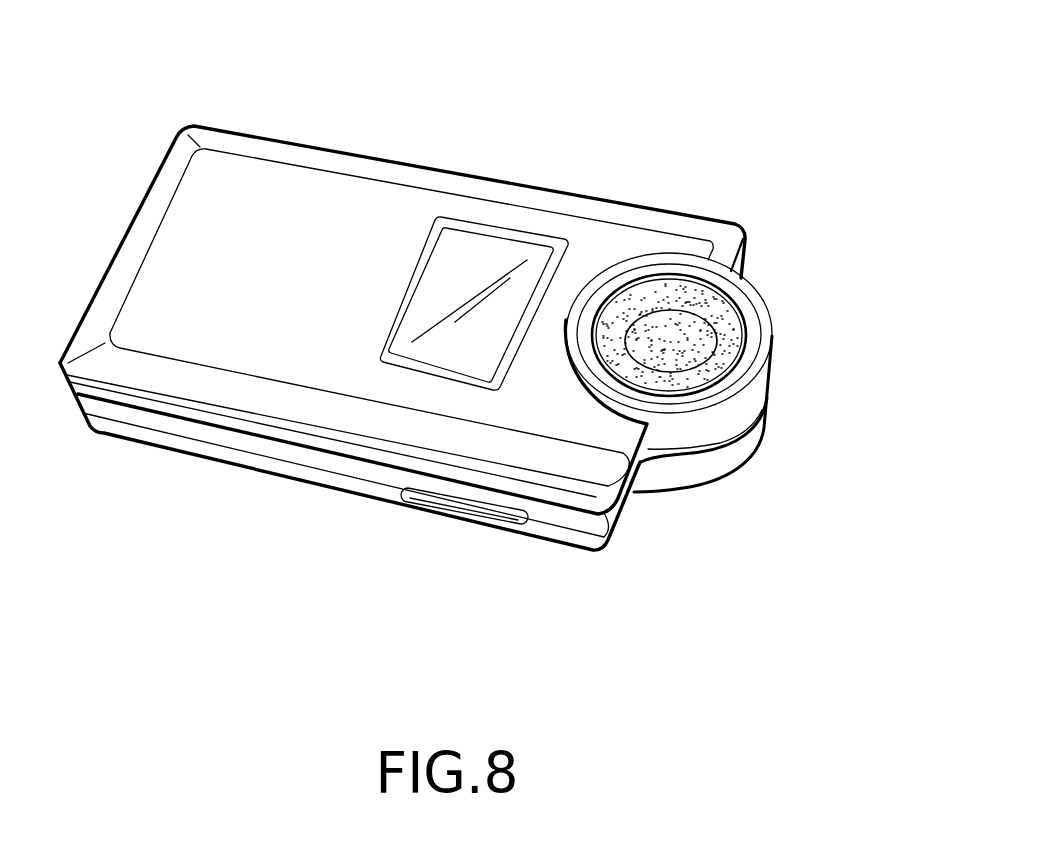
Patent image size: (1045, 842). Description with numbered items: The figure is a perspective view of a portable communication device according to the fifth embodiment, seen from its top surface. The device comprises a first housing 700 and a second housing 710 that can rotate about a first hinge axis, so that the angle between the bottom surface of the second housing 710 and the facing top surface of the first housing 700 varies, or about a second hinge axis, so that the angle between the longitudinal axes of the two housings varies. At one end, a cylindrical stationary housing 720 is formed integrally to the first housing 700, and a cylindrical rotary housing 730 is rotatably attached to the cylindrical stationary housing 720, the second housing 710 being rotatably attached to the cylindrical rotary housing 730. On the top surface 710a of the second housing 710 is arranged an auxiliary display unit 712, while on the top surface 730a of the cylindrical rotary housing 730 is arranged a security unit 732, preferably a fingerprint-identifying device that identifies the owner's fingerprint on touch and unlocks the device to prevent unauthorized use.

The first housing 700 is at (366, 502).
The second housing 710 is at (405, 156).
The top surface of the second housing 710a is at (313, 200).
The auxiliary display unit 712 is at (500, 255).
The cylindrical stationary housing 720 is at (718, 463).
The cylindrical rotary housing 730 is at (740, 406).
The top surface of the cylindrical rotary housing 730a is at (778, 323).
The security unit 732 is at (702, 347).